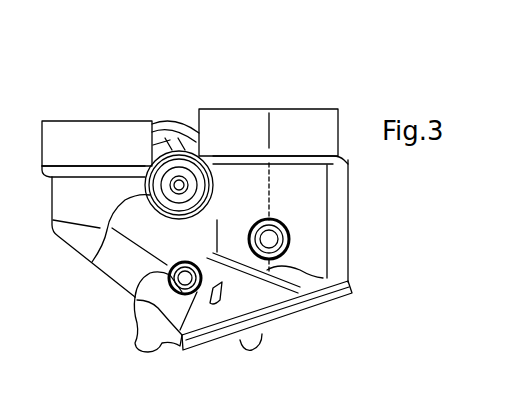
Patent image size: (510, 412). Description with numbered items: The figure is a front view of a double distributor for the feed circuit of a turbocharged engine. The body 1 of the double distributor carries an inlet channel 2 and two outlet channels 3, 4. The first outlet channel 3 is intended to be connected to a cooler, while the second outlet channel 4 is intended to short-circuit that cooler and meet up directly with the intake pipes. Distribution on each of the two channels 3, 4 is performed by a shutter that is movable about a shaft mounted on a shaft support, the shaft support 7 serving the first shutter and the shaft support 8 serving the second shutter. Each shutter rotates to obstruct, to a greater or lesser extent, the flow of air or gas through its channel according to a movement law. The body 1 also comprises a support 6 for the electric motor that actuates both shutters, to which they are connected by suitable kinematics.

The body 1 is at (318, 72).
The inlet channel 2 is at (300, 332).
The first outlet channel 3 is at (269, 60).
The second outlet channel 4 is at (98, 113).
The support 6 is at (172, 184).
The shaft support 7 is at (297, 224).
The shaft support 8 is at (132, 297).